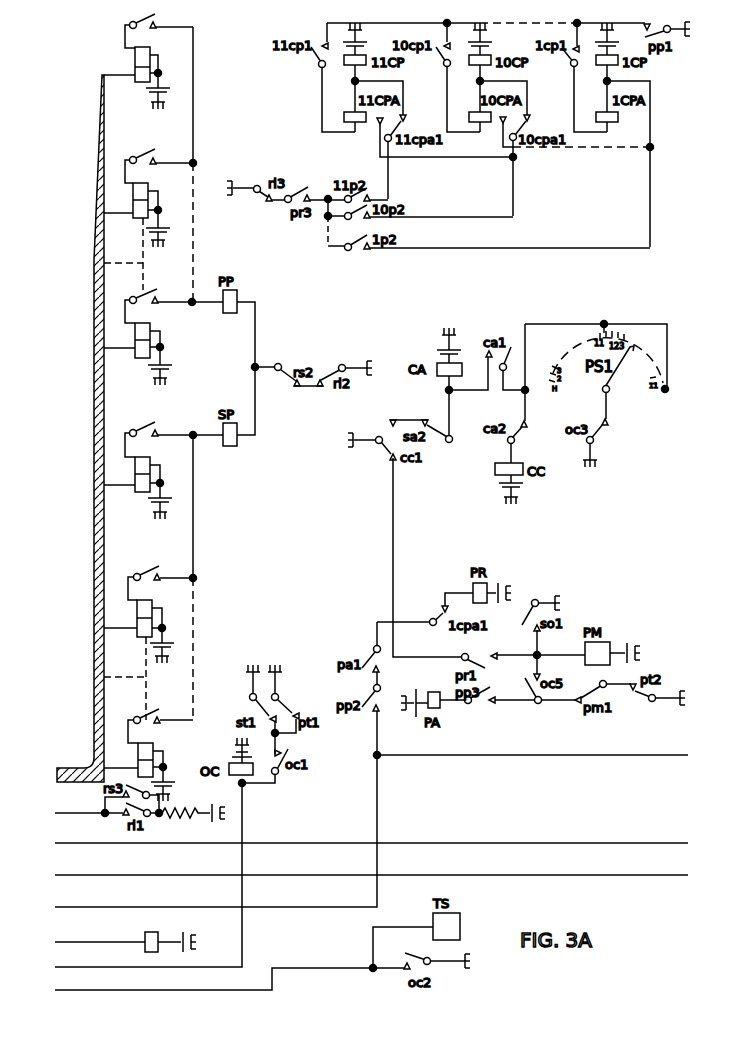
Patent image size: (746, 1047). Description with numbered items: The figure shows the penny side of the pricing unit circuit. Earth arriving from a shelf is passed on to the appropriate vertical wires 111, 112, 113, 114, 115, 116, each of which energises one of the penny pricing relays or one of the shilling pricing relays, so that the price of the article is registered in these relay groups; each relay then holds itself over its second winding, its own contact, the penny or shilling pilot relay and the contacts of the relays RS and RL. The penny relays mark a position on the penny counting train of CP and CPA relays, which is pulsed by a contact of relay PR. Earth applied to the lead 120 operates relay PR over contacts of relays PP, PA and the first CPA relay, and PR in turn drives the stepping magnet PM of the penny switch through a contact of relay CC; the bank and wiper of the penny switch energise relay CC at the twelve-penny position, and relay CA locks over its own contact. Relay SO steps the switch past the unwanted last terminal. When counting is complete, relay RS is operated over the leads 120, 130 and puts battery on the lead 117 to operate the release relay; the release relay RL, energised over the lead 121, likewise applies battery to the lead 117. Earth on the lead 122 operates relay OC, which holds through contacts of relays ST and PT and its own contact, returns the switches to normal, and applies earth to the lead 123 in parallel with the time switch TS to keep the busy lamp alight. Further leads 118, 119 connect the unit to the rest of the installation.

The vertical wire 111 is at (148, 59).
The vertical wire 112 is at (148, 217).
The vertical wire 113 is at (163, 335).
The vertical wire 114 is at (143, 468).
The vertical wire 115 is at (148, 640).
The vertical wire 116 is at (148, 752).
The lead 117 is at (80, 806).
The lead 118 is at (371, 836).
The lead 119 is at (371, 868).
The lead 120 is at (216, 831).
The lead 121 is at (125, 934).
The lead 122 is at (148, 875).
The lead 123 is at (214, 979).
The lead 130 is at (532, 747).